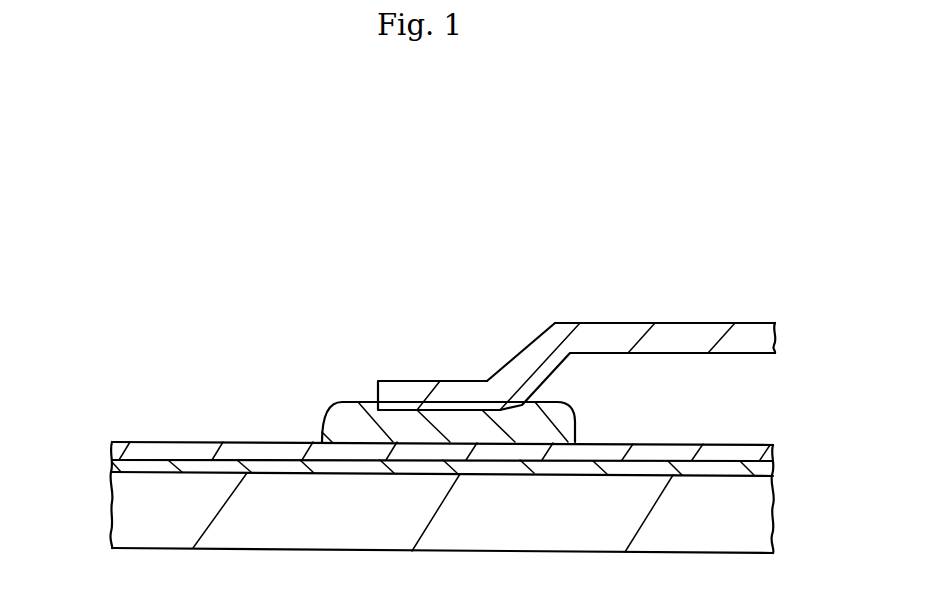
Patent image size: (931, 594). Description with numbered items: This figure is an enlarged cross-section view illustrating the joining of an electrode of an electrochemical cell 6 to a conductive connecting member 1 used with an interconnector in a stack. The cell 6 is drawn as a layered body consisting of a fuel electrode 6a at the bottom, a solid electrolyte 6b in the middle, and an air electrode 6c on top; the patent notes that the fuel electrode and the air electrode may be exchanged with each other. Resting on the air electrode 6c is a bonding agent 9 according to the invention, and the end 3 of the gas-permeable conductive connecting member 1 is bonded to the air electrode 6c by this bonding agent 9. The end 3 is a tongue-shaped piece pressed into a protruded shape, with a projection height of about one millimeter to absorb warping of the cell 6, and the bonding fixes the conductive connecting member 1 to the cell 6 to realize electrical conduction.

The conductive connecting member 1 is at (668, 335).
The end of conductive connecting member 3 is at (423, 397).
The bonding agent 9 is at (576, 422).
The electrochemical cell 6 is at (75, 443).
The fuel electrode 6a is at (763, 530).
The solid electrolyte 6b is at (775, 465).
The air electrode 6c is at (775, 447).